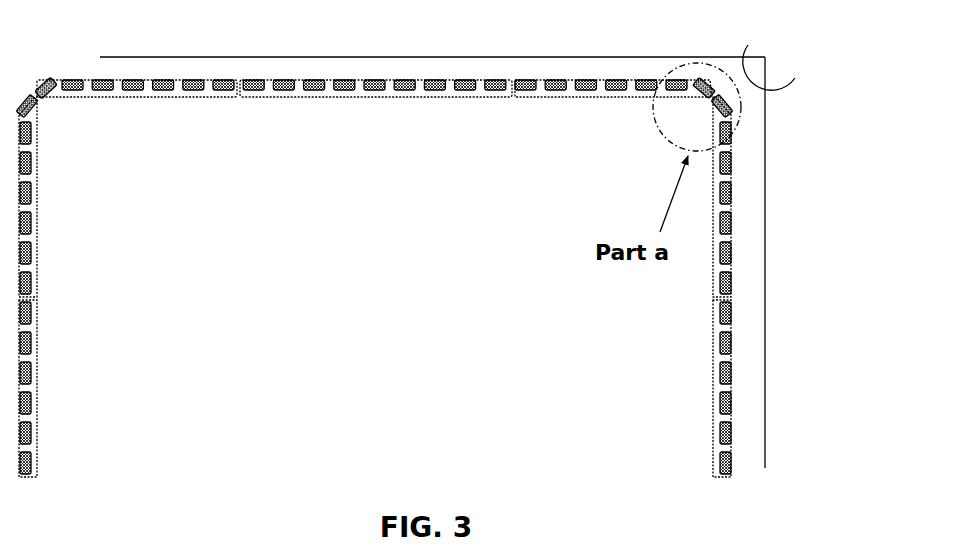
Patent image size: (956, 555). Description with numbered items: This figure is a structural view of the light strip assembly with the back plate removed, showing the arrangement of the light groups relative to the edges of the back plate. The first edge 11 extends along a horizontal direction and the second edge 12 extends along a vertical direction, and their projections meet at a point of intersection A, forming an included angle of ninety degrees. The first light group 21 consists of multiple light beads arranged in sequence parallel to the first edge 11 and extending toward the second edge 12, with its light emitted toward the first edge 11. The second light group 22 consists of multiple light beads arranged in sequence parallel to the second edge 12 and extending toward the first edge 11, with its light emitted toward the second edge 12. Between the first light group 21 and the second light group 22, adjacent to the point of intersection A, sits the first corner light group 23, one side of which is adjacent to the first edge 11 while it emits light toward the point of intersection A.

The first edge 11 is at (345, 49).
The second edge 12 is at (770, 314).
The first light group 21 is at (98, 67).
The second light group 22 is at (735, 375).
The first corner light group 23 is at (690, 110).
The point of intersection A is at (767, 55).